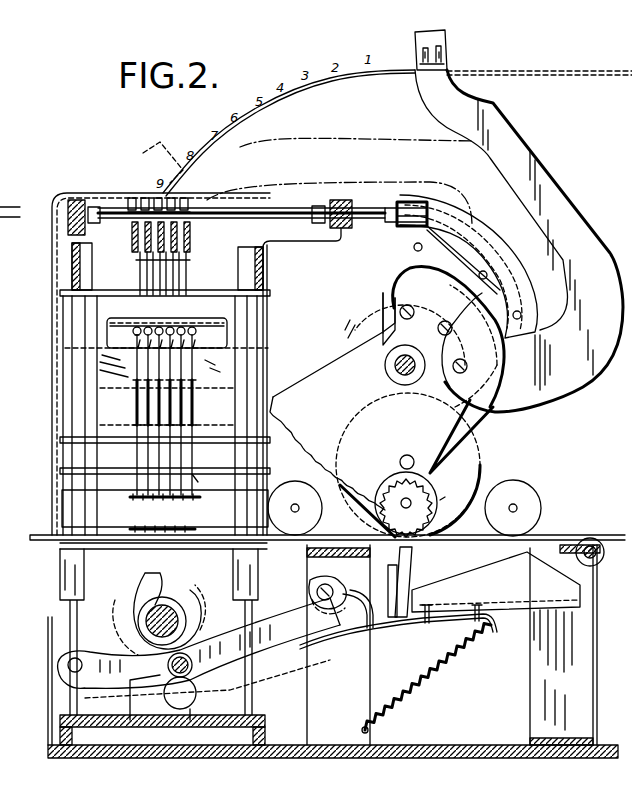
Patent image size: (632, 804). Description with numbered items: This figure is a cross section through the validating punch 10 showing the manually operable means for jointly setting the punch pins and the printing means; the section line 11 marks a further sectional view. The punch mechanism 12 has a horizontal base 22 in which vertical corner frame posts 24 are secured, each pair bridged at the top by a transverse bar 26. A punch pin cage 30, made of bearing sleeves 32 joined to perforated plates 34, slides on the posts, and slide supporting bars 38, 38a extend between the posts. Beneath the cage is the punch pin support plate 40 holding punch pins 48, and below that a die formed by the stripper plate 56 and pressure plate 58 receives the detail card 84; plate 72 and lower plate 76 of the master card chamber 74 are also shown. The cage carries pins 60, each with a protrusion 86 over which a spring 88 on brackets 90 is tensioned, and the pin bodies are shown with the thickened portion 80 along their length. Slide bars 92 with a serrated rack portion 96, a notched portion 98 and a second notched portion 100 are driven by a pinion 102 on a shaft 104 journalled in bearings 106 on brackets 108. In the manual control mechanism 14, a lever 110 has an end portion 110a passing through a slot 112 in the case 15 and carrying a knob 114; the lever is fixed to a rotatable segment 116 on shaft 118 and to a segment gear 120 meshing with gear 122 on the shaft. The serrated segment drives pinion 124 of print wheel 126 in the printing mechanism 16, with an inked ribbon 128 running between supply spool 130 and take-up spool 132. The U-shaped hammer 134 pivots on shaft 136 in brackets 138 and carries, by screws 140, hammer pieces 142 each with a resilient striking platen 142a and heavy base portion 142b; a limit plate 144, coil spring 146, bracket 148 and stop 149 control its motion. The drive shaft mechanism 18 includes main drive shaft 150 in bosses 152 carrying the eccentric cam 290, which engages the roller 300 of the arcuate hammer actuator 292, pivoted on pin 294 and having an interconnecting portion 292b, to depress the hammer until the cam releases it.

The validating punch 10 is at (176, 124).
The section line 11 is at (395, 36).
The punch mechanism 12 is at (288, 346).
The manual control mechanism 14 is at (600, 211).
The case 15 is at (546, 72).
The printing mechanism 16 is at (571, 519).
The drive shaft mechanism 18 is at (226, 597).
The horizontal base 22 is at (115, 715).
The corner frame posts 24 is at (72, 262).
The transverse bar 26 is at (72, 282).
The punch pin cage 30 is at (58, 388).
The bearing sleeves 32 is at (72, 366).
The perforated plates 34 is at (230, 280).
The slide supporting bar 38 is at (232, 358).
The slide supporting bar 38a is at (220, 428).
The punch pin support plate 40 is at (70, 505).
The punch pins 48 is at (132, 495).
The stripper plate 56 is at (125, 518).
The pressure plate 58 is at (117, 555).
The pins 60 is at (183, 347).
The plate 72 is at (70, 460).
The master card chamber 74 is at (230, 462).
The lower plate 76 is at (198, 478).
The needle collar 80 is at (137, 410).
The detail card 84 is at (38, 535).
The protrusion 86 is at (136, 336).
The spring 88 is at (232, 322).
The brackets 90 is at (108, 328).
The slide bars 92 is at (37, 232).
The serrated rack portion 96 is at (132, 226).
The notched portion 98 is at (136, 262).
The second notched portion 100 is at (0, 222).
The pinion 102 is at (147, 195).
The shaft 104 is at (255, 216).
The bearings 106 is at (88, 194).
The brackets 108 is at (68, 238).
The manually operated lever 110 is at (530, 160).
The end portion 110a is at (452, 56).
The slot 112 is at (380, 75).
The knob 114 is at (448, 36).
The rotatable segment 116 is at (338, 360).
The shaft 118 is at (395, 373).
The segment gear 120 is at (512, 300).
The gear 122 is at (428, 213).
The pinion 124 is at (432, 486).
The print wheel 126 is at (442, 500).
The inked ribbon 128 is at (450, 536).
The supply spool 130 is at (287, 492).
The take-up spool 132 is at (530, 500).
The U-shaped hammer 134 is at (575, 592).
The shaft 136 is at (600, 546).
The brackets 138 is at (582, 540).
The screws 140 is at (395, 625).
The hammer pieces 142 is at (420, 570).
The resilient striking platen 142a is at (436, 562).
The heavy base portion 142b is at (420, 590).
The limit plate 144 is at (448, 622).
The coil spring 146 is at (440, 692).
The bracket 148 is at (318, 700).
The stop 149 is at (328, 582).
The main drive shaft 150 is at (165, 610).
The bosses 152 is at (131, 638).
The eccentric cam 290 is at (162, 590).
The arcuate hammer actuator 292 is at (280, 612).
The interconnecting portion 292b is at (295, 648).
The pin 294 is at (75, 668).
The roller 300 is at (195, 670).